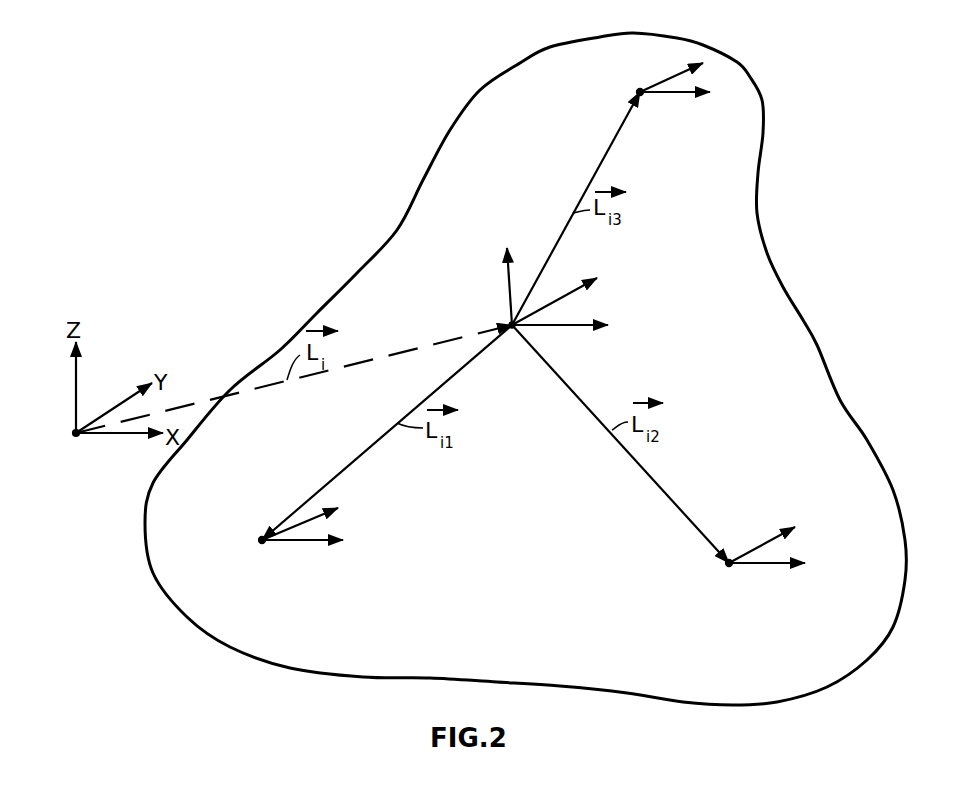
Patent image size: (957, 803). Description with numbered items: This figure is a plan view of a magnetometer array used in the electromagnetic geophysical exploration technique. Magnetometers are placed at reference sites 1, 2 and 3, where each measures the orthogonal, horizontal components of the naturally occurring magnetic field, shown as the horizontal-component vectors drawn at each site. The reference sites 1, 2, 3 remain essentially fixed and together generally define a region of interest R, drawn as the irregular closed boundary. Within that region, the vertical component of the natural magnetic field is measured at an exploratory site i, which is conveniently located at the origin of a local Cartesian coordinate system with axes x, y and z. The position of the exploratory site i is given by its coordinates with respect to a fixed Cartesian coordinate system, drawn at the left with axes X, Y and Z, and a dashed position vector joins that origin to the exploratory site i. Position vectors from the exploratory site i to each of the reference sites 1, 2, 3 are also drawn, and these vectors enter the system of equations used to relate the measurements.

The region of interest R is at (635, 30).
The exploratory site i is at (550, 293).
The reference site 1 is at (312, 523).
The reference site 2 is at (774, 547).
The reference site 3 is at (682, 74).